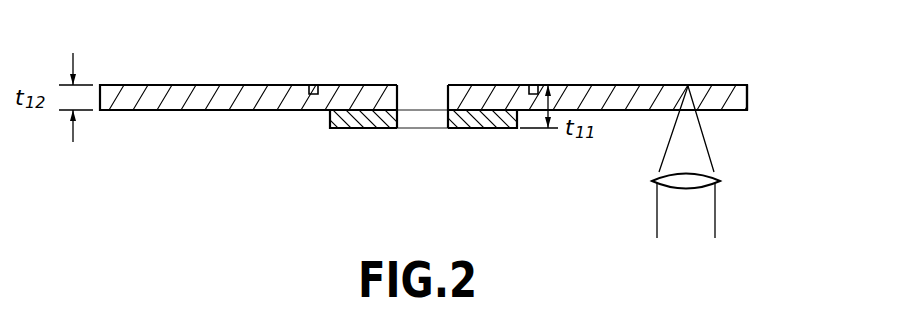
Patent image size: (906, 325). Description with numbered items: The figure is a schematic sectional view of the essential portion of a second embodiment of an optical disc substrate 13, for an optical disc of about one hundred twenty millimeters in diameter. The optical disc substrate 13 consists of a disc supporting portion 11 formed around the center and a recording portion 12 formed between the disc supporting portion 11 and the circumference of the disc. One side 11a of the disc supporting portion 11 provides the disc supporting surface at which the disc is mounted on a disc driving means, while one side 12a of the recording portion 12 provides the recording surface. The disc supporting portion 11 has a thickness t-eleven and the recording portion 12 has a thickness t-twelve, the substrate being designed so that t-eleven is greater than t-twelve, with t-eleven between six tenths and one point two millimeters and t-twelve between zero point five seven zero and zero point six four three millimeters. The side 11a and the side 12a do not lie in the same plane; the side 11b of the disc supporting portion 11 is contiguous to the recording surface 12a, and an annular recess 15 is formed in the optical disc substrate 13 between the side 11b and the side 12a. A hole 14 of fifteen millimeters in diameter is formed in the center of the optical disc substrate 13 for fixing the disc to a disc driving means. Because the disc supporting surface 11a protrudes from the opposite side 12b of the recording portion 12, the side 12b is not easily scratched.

The disc supporting portion 11 is at (368, 128).
The disc supporting surface 11a is at (477, 128).
The side of the disc supporting portion 11b is at (481, 85).
The recording portion 12 is at (638, 110).
The recording surface 12a is at (707, 85).
The side of the recording portion 12b is at (724, 110).
The optical disc substrate 13 is at (758, 86).
The hole 14 is at (401, 85).
The annular recess 15 is at (313, 88).